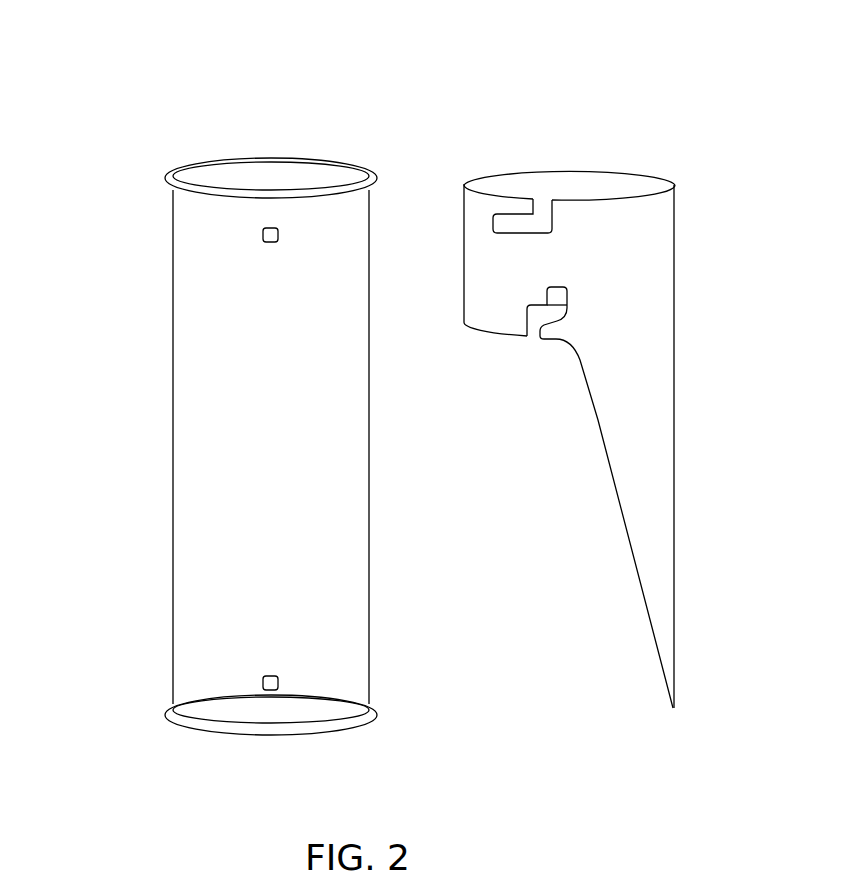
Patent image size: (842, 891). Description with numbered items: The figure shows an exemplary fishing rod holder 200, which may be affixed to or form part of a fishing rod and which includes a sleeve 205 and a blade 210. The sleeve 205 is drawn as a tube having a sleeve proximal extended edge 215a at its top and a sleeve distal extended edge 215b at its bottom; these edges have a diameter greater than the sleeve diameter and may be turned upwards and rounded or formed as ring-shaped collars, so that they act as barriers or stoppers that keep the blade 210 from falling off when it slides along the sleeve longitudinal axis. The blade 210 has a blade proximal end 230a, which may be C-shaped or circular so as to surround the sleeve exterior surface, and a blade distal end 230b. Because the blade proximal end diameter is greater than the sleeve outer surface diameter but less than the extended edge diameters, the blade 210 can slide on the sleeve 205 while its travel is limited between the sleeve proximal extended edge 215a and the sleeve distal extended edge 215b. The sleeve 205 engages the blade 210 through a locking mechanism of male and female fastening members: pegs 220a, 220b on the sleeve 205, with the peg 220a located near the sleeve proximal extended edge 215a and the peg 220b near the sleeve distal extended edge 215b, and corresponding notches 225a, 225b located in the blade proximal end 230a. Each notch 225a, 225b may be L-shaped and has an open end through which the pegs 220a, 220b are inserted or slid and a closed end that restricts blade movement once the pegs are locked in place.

The fishing rod holder 200 is at (144, 58).
The sleeve 205 is at (173, 447).
The blade 210 is at (674, 443).
The sleeve proximal extended edge 215a is at (168, 178).
The sleeve distal extended edge 215b is at (168, 713).
The peg 220a is at (271, 243).
The peg 220b is at (270, 676).
The notch 225a is at (513, 217).
The notch 225b is at (513, 326).
The blade proximal end 230a is at (652, 240).
The blade distal end 230b is at (656, 610).